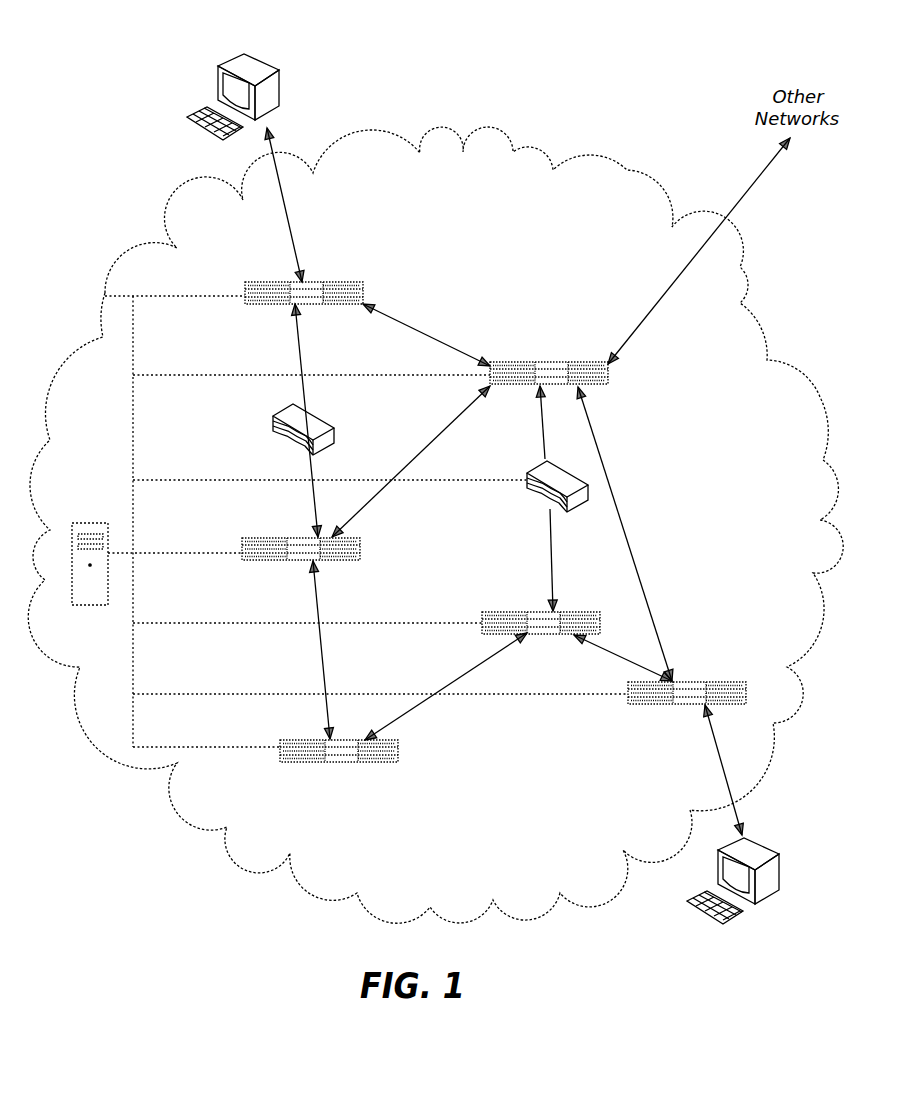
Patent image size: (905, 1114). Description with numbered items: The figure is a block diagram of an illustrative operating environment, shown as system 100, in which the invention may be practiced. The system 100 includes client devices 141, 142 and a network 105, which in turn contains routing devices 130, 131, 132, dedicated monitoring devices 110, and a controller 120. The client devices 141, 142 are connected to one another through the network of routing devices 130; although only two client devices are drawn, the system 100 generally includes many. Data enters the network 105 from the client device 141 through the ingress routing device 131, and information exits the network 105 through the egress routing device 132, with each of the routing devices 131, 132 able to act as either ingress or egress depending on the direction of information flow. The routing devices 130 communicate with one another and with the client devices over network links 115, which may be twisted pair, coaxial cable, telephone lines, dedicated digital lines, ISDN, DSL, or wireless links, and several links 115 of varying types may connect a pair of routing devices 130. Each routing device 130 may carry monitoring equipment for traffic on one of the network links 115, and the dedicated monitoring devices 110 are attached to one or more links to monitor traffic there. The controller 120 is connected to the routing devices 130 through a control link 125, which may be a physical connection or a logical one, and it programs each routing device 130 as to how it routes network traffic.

The system 100 is at (110, 892).
The network 105 is at (627, 171).
The dedicated monitoring device 110 is at (287, 414).
The network link 115 is at (603, 468).
The controller 120 is at (72, 523).
The control link 125 is at (112, 297).
The routing device 130 is at (540, 362).
The ingress routing device 131 is at (695, 683).
The egress routing device 132 is at (331, 282).
The client device 141 is at (744, 838).
The client device 142 is at (243, 53).